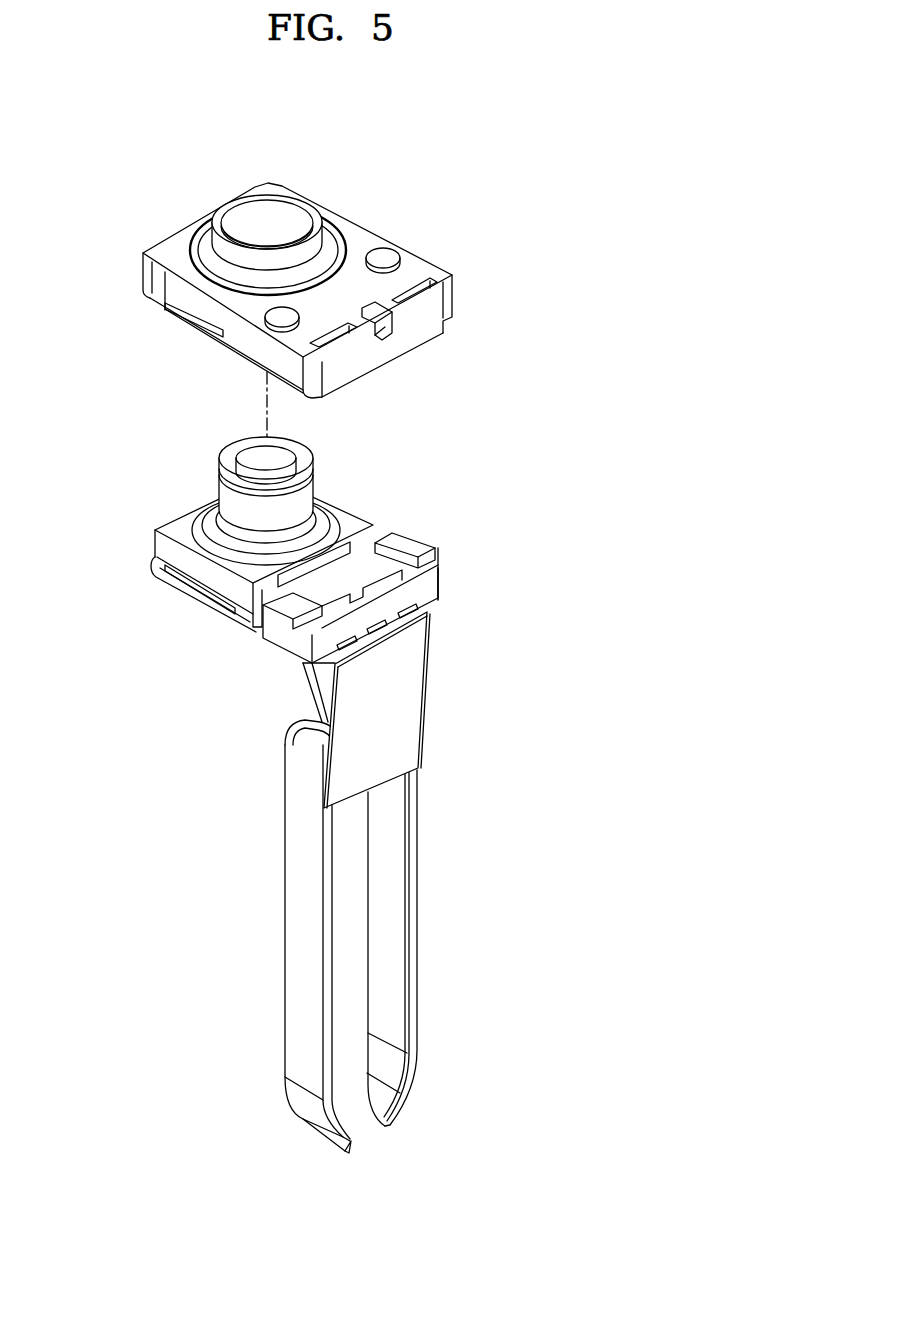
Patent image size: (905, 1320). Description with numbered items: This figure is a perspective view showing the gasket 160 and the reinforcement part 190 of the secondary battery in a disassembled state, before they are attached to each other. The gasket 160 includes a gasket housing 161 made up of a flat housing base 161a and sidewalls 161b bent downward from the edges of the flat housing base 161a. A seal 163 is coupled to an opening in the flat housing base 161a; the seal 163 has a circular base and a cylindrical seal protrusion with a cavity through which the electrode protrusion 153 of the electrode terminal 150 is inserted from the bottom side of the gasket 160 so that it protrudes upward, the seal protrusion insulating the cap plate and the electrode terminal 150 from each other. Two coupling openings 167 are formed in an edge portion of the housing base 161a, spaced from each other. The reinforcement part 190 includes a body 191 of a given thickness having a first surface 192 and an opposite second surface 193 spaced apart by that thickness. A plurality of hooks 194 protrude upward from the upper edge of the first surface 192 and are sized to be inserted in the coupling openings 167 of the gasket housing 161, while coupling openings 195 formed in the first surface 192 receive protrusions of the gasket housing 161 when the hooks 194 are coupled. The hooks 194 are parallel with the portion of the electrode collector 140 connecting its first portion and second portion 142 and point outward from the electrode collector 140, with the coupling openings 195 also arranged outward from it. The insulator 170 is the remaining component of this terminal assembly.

The electrode collector 140 is at (409, 936).
The second portion 142 is at (395, 918).
The electrode terminal 150 is at (209, 534).
The electrode protrusion 153 is at (232, 495).
The gasket 160 is at (339, 263).
The gasket housing 161 is at (333, 203).
The flat housing base 161a is at (415, 267).
The sidewalls 161b is at (417, 337).
The seal 163 is at (224, 249).
The coupling opening 167 is at (455, 278).
The insulator 170 is at (150, 576).
The reinforcement part 190 is at (362, 631).
The body 191 is at (250, 600).
The first surface 192 is at (395, 677).
The second surface 193 is at (325, 678).
The hook 194 is at (350, 550).
The coupling opening 195 is at (430, 617).